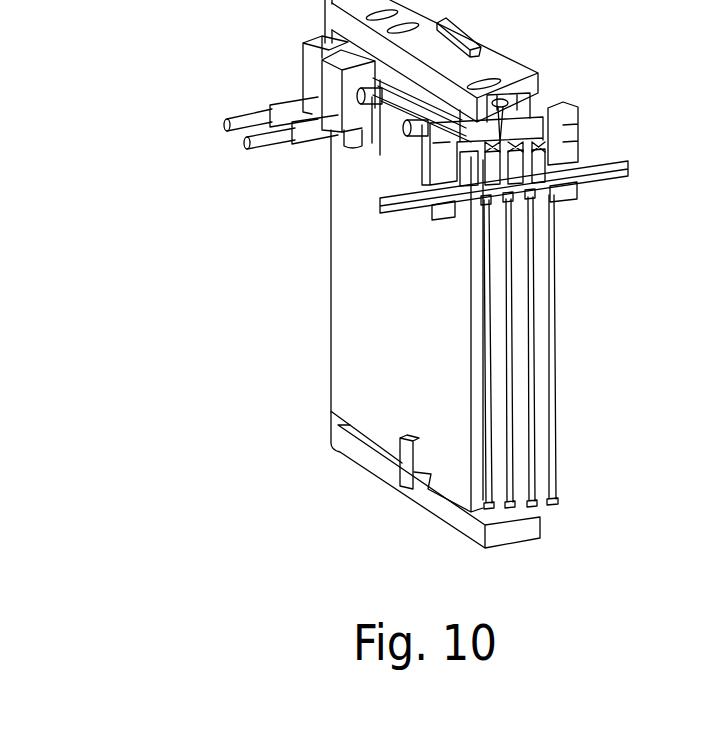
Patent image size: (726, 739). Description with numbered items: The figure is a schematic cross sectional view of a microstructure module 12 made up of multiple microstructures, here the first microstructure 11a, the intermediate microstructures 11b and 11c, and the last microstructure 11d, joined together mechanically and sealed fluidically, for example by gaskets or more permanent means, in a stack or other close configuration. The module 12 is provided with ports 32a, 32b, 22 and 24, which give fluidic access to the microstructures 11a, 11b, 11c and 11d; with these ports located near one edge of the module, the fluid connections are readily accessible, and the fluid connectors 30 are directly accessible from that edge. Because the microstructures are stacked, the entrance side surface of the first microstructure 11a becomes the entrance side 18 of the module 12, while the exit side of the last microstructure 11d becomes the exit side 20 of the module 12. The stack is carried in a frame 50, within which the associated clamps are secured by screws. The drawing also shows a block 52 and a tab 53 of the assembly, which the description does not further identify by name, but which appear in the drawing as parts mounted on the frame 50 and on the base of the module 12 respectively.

The microstructure module 12 is at (356, 548).
The entrance side 18 is at (411, 324).
The exit side 20 is at (567, 274).
The port 22 is at (352, 211).
The port 24 is at (650, 161).
The fluid connector 30 is at (600, 160).
The port 32a is at (226, 146).
The port 32b is at (207, 131).
The frame 50 is at (473, 70).
The block 52 is at (318, 44).
The tab 53 is at (406, 478).
The first microstructure 11a is at (478, 386).
The microstructure 11b is at (496, 428).
The microstructure 11c is at (520, 455).
The last microstructure 11d is at (543, 482).